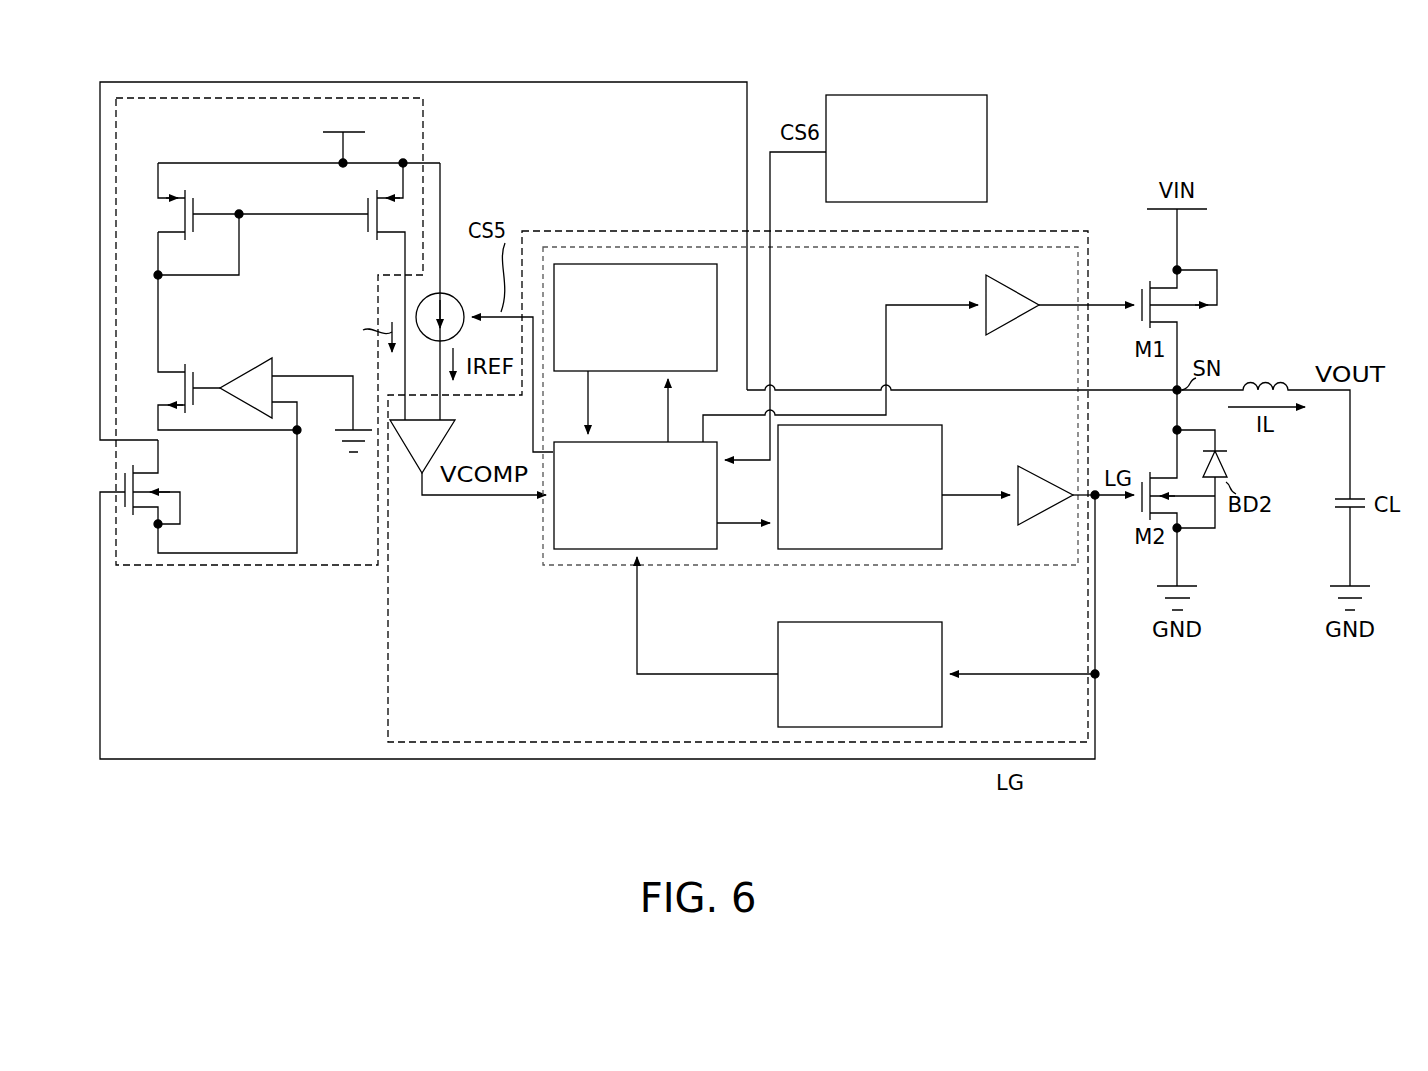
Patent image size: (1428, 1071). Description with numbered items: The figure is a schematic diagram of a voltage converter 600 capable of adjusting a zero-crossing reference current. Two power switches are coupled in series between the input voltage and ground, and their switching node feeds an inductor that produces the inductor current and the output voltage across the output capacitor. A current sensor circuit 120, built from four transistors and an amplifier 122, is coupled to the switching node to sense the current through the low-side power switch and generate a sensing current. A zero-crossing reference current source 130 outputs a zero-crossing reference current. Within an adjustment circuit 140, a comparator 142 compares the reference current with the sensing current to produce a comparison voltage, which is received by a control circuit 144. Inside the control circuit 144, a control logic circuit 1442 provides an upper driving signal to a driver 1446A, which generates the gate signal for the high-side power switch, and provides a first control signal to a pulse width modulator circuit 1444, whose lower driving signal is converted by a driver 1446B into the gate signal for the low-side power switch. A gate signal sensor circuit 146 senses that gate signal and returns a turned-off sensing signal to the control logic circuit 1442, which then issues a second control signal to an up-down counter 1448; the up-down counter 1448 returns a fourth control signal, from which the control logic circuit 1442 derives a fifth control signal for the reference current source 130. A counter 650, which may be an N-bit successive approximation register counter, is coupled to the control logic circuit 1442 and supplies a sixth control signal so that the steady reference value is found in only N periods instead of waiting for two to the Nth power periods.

The voltage converter 600 is at (72, 62).
The current sensor circuit 120 is at (262, 98).
The amplifier 122 is at (244, 372).
The zero-crossing reference current source 130 is at (462, 294).
The adjustment circuit 140 is at (664, 230).
The comparator 142 is at (409, 466).
The control circuit 144 is at (604, 246).
The gate signal sensor circuit 146 is at (840, 716).
The counter 650 is at (888, 171).
The control logic circuit 1442 is at (611, 533).
The pulse width modulator circuit 1444 is at (835, 541).
The driver 1446A is at (1018, 318).
The driver 1446B is at (1043, 516).
The up-down counter 1448 is at (611, 355).